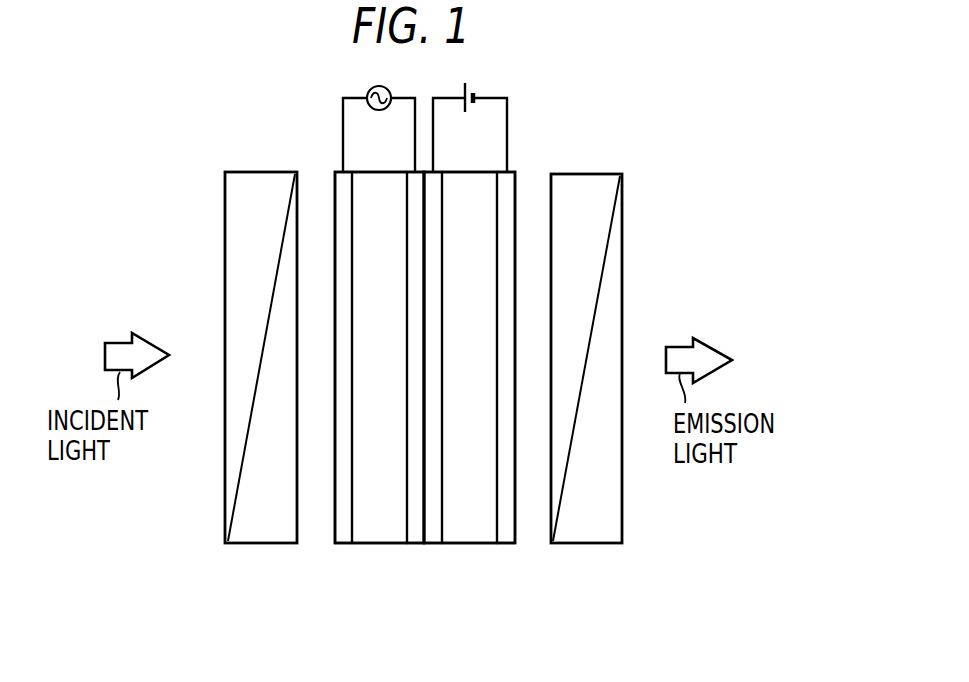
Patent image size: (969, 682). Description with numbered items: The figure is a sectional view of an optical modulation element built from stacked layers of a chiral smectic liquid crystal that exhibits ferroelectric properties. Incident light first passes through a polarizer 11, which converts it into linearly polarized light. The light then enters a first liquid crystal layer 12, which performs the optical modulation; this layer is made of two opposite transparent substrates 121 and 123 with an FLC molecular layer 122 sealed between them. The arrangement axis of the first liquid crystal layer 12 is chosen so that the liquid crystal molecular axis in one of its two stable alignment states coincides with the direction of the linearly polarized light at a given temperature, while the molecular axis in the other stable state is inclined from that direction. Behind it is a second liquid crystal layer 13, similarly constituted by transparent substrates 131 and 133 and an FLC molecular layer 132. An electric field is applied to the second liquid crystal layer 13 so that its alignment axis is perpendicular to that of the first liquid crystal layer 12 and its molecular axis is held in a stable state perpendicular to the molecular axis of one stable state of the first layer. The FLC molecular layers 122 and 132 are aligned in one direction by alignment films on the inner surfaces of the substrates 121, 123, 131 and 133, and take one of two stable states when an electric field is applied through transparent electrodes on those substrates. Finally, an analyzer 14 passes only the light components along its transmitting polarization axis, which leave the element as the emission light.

The polarizer 11 is at (245, 545).
The first liquid crystal layer 12 is at (369, 416).
The transparent substrate 121 is at (345, 546).
The FLC molecular layer 122 is at (378, 546).
The transparent substrate 123 is at (402, 382).
The second liquid crystal layer 13 is at (476, 421).
The transparent substrate 131 is at (437, 546).
The FLC molecular layer 132 is at (476, 546).
The transparent substrate 133 is at (510, 395).
The analyzer 14 is at (610, 545).